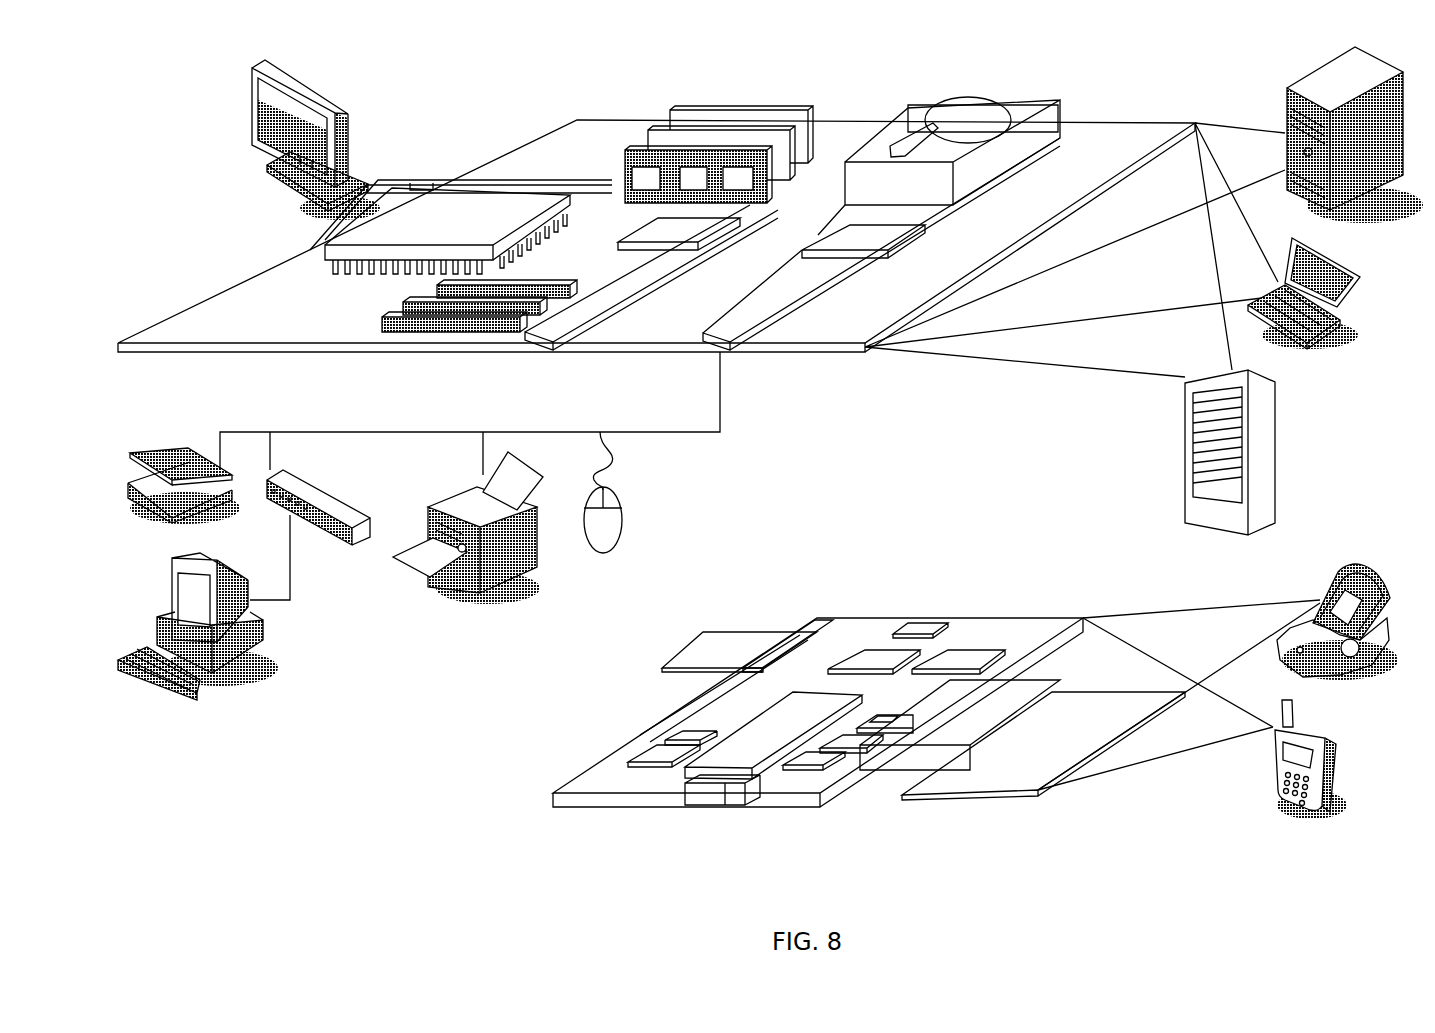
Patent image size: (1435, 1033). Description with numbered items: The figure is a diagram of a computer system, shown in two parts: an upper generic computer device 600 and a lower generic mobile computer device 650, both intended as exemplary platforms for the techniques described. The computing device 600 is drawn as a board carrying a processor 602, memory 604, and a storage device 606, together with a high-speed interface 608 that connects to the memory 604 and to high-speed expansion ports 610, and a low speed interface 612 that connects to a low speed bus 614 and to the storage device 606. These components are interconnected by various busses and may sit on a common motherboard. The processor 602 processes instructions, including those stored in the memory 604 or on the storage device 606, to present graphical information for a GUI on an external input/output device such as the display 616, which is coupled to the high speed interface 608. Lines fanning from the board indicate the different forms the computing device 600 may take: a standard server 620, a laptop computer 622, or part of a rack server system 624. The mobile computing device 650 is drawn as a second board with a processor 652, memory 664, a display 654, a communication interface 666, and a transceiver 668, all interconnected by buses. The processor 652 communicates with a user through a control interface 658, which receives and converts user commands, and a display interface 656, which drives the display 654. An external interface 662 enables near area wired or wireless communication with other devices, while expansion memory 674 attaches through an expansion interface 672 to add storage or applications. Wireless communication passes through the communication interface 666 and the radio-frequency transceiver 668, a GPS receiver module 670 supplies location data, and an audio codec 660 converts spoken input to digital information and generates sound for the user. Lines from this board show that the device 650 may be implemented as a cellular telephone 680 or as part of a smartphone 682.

The generic computer device 600 is at (461, 91).
The processor 602 is at (325, 250).
The memory 604 is at (693, 110).
The storage device 606 is at (940, 97).
The high-speed interface 608 is at (600, 185).
The high-speed expansion ports 610 is at (400, 310).
The low speed interface 612 is at (845, 237).
The low speed bus 614 is at (730, 340).
The display 616 is at (263, 62).
The standard server 620 is at (1287, 105).
The laptop computer 622 is at (1350, 263).
The rack server system 624 is at (1187, 477).
The generic mobile computer device 650 is at (521, 813).
The processor 652 is at (745, 757).
The display 654 is at (1002, 778).
The display interface 656 is at (845, 760).
The control interface 658 is at (882, 752).
The audio codec 660 is at (883, 727).
The external interface 662 is at (707, 805).
The memory 664 is at (652, 745).
The communication interface 666 is at (873, 655).
The transceiver 668 is at (958, 655).
The GPS receiver module 670 is at (932, 618).
The expansion interface 672 is at (797, 633).
The expansion memory 674 is at (717, 632).
The cellular telephone 680 is at (1330, 574).
The smartphone 682 is at (1273, 772).